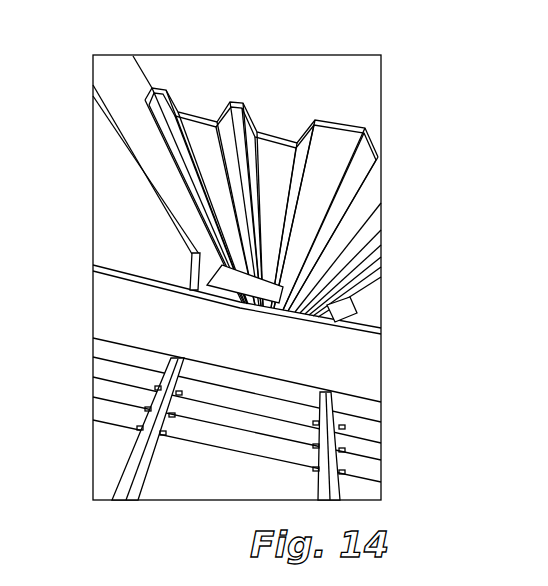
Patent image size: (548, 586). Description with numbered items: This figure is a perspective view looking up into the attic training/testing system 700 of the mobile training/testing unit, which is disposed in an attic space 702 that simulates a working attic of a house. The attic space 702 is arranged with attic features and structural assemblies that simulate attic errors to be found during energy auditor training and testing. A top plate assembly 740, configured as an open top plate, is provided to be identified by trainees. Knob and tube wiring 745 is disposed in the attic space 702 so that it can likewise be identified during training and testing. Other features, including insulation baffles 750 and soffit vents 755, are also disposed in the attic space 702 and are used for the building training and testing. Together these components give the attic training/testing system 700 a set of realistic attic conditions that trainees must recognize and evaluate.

The attic training/testing system 700 is at (386, 99).
The attic space 702 is at (142, 299).
The top plate assembly 740 is at (258, 303).
The knob and tube wiring 745 is at (197, 444).
The insulation baffles 750 is at (349, 199).
The soffit vents 755 is at (345, 298).